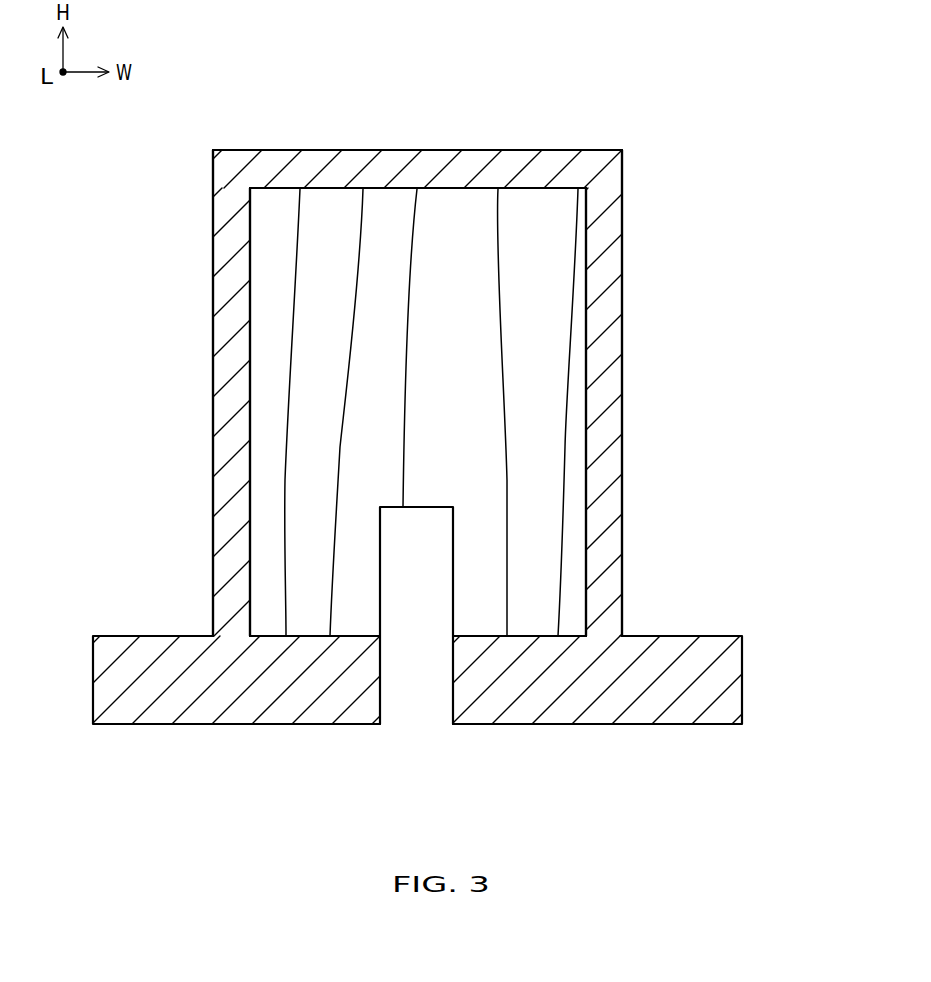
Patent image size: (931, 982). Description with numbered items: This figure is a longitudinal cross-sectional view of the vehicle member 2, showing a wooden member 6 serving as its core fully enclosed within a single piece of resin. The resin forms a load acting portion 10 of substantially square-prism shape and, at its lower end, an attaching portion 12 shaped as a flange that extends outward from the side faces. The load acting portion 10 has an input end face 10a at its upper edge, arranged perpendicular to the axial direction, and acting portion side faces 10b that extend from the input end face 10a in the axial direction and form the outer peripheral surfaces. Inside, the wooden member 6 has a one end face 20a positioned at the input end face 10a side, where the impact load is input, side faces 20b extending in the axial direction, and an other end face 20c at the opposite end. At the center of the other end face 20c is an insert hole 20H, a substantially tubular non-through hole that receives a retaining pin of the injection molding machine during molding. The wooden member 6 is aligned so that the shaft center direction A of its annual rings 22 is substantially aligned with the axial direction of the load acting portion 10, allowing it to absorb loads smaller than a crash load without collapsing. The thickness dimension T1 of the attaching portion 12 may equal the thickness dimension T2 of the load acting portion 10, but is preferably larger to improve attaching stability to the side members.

The vehicle member 2 is at (645, 127).
The load acting portion 10 is at (628, 258).
The input end face 10a is at (402, 149).
The acting portion side faces 10b is at (624, 339).
The attaching portion 12 is at (676, 634).
The one end face 20a is at (532, 187).
The side faces 20b is at (598, 410).
The other end face 20c is at (310, 638).
The insert hole 20H is at (380, 598).
The annual rings 22 is at (299, 265).
The wooden member 6 is at (534, 463).
The shaft center direction of the annual rings A is at (433, 238).
The thickness dimension of the attaching portion T1 is at (742, 636).
The thickness dimension of the load acting portion T2 is at (213, 150).